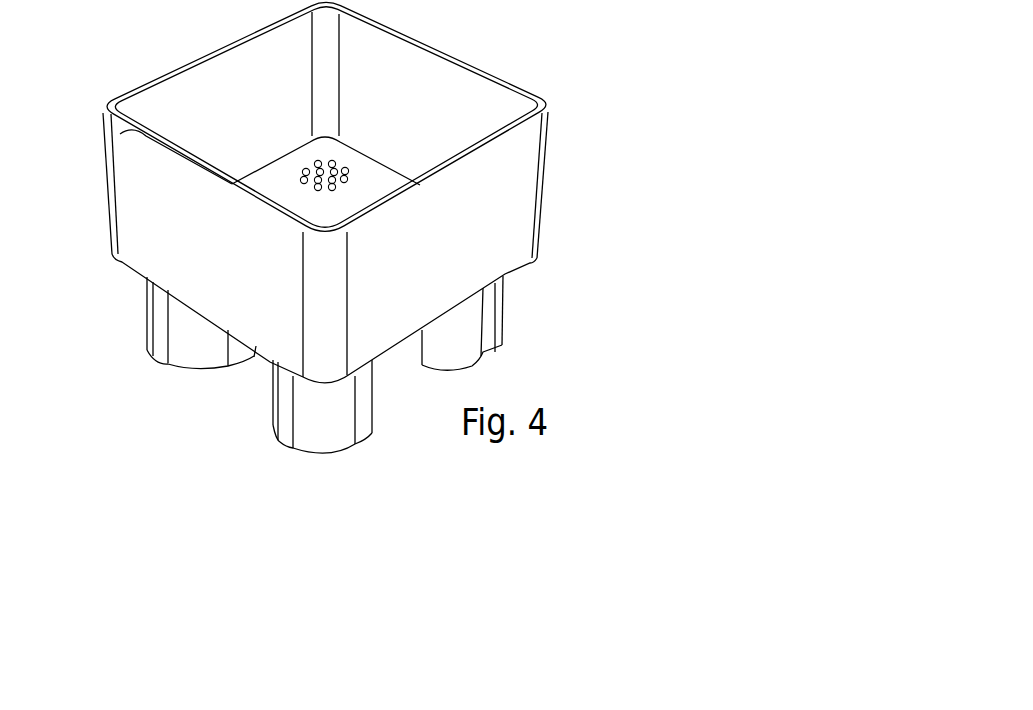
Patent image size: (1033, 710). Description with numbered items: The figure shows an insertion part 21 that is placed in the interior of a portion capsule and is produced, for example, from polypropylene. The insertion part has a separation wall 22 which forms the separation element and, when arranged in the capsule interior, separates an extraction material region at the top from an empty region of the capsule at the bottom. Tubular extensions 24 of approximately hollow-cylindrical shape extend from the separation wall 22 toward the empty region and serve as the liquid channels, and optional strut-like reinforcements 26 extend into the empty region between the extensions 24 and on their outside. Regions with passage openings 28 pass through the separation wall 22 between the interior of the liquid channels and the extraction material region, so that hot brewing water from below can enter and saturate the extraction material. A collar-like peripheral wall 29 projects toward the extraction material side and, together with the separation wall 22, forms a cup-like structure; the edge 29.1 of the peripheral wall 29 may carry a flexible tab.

The insertion part 21 is at (388, 244).
The separation wall 22 is at (365, 163).
The tubular extensions 24 is at (465, 343).
The strut-like reinforcements 26 is at (253, 355).
The passage openings 28 is at (313, 178).
The peripheral wall 29 is at (477, 208).
The edge of the peripheral wall 29.1 is at (120, 134).